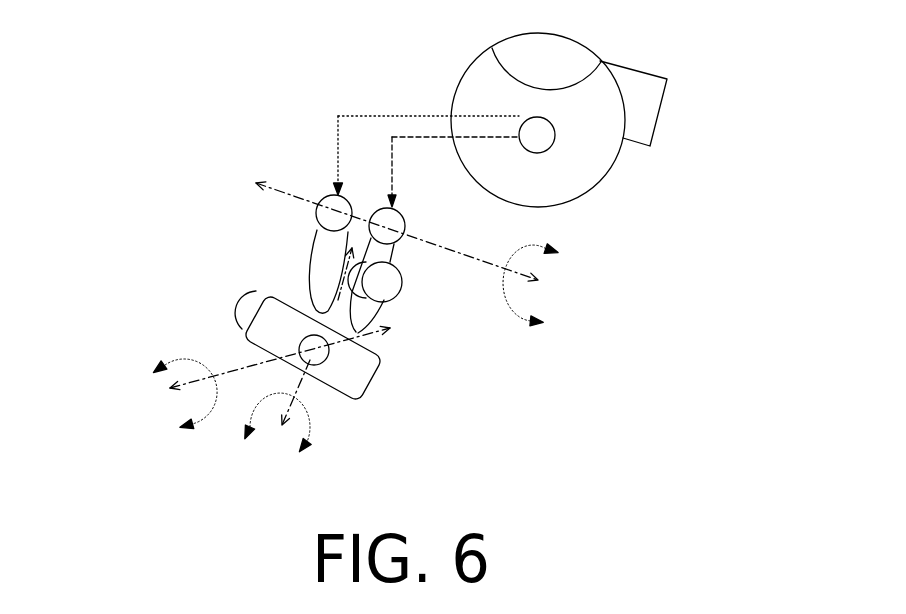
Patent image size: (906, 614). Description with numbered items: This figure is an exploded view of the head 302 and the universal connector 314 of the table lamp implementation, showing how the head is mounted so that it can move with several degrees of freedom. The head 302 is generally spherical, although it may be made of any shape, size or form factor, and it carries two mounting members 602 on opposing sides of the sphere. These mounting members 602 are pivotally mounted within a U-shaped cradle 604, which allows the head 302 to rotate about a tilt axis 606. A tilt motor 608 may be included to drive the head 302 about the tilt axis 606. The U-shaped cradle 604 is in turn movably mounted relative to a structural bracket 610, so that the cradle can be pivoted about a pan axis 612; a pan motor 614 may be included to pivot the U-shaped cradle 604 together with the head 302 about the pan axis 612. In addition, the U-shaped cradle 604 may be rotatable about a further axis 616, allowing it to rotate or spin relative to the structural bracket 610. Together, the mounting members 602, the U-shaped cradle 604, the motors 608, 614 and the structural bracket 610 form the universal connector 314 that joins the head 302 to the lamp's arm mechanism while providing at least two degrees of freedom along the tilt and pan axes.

The head 302 is at (602, 180).
The universal connector 314 is at (190, 270).
The mounting members 602 is at (519, 130).
The U-shaped cradle 604 is at (320, 255).
The tilt axis 606 is at (488, 262).
The tilt motor 608 is at (382, 282).
The structural bracket 610 is at (372, 385).
The pan axis 612 is at (183, 390).
The pan motor 614 is at (238, 307).
The axis 616 is at (283, 430).